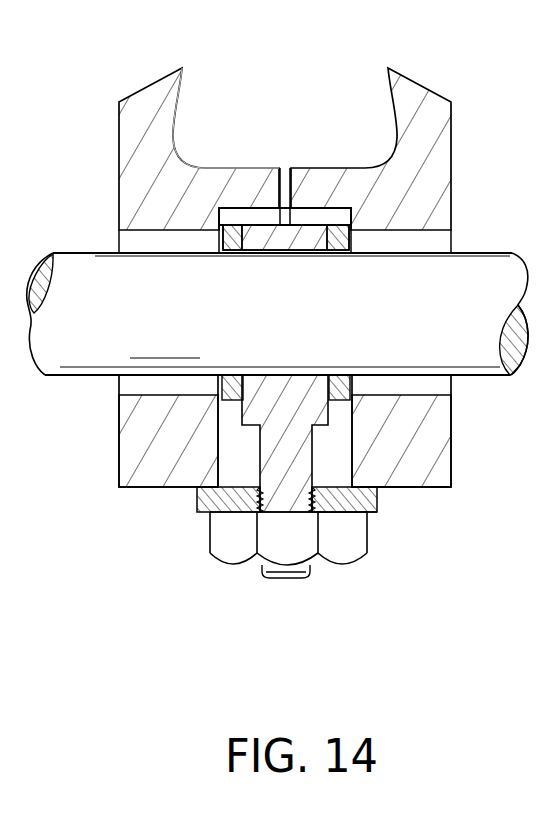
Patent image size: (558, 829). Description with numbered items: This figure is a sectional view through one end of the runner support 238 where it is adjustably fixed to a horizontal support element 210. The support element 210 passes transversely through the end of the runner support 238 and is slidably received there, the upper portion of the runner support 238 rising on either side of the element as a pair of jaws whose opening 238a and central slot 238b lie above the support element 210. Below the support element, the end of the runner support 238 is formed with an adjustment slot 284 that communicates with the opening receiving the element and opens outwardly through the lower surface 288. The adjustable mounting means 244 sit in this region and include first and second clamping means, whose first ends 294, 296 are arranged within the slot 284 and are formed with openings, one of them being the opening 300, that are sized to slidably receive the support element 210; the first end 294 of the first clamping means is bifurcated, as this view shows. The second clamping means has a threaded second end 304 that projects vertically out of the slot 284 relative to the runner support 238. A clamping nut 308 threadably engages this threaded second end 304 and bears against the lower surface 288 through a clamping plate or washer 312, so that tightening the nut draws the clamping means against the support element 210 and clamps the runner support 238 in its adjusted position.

The support element 210 is at (478, 253).
The runner support 238 is at (280, 133).
The clamp jaw opening 238a is at (323, 152).
The clamp slot 238b is at (281, 178).
The first end of first clamping means 294 is at (219, 214).
The first end of second clamping means 296 is at (263, 245).
The opening 300 is at (298, 253).
The lower surface 288 is at (423, 487).
The adjustable mounting means 244 is at (306, 511).
The adjustment slot 284 is at (340, 462).
The threaded second end 304 is at (218, 468).
The clamping plate or washer 312 is at (380, 500).
The clamping nut 308 is at (332, 566).